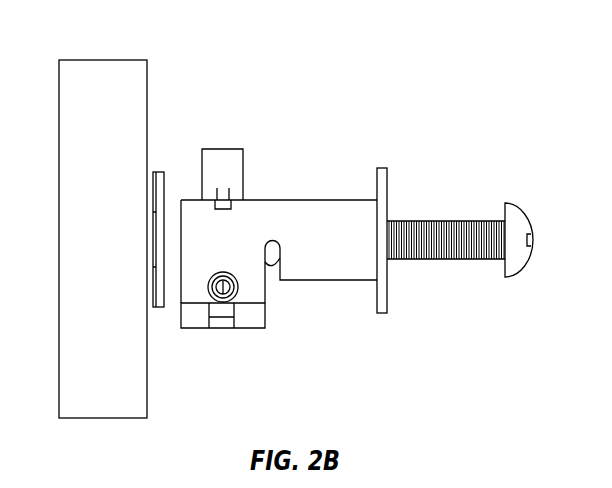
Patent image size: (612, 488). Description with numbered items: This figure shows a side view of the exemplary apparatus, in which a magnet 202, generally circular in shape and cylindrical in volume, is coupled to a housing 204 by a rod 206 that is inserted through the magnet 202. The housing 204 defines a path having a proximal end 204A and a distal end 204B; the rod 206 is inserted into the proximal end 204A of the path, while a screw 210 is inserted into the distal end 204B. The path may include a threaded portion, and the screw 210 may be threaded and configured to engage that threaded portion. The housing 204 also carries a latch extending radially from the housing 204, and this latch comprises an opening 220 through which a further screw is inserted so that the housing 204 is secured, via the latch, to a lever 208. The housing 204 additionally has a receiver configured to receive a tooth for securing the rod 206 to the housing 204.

The magnet 202 is at (127, 72).
The housing 204 is at (326, 281).
The proximal end 204A is at (180, 288).
The distal end 204B is at (391, 188).
The rod 206 is at (174, 200).
The lever 208 is at (232, 148).
The screw 210 is at (485, 220).
The opening 220 is at (222, 293).